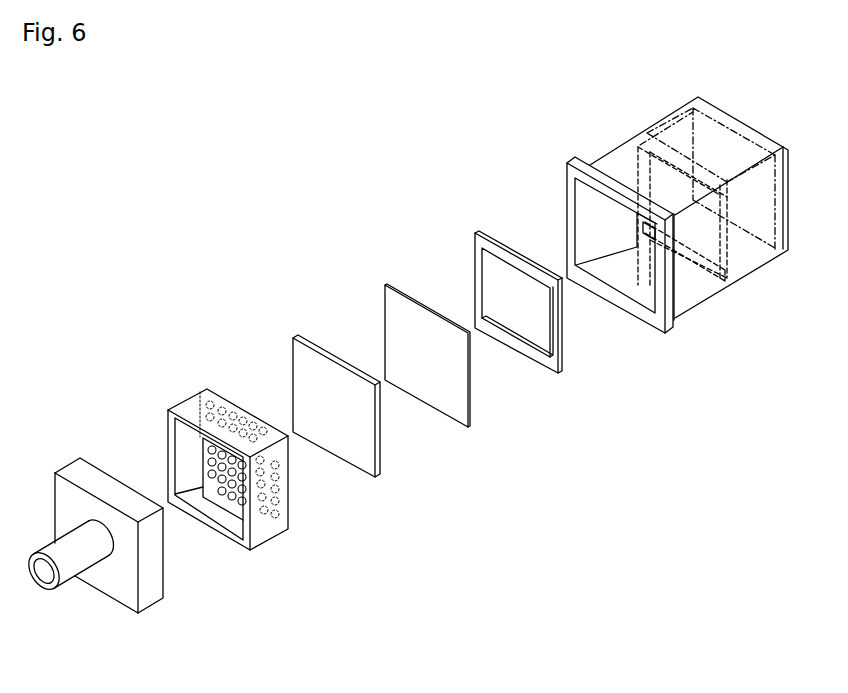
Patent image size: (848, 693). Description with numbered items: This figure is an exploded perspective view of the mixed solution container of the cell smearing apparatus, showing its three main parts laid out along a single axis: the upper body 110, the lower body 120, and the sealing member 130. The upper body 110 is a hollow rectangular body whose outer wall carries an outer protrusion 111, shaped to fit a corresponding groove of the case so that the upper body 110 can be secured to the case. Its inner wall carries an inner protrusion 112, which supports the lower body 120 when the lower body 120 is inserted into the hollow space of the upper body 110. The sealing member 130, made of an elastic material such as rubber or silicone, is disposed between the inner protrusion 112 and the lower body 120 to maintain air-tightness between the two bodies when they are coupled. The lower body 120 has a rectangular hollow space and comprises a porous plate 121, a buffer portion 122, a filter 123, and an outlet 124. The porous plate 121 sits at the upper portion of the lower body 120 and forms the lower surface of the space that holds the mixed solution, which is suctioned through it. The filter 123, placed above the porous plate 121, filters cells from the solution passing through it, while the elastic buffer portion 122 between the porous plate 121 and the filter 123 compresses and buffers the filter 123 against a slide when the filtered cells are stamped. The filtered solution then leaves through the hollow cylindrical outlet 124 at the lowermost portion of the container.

The upper body 110 is at (713, 132).
The outer protrusion 111 is at (645, 320).
The inner protrusion 112 is at (730, 277).
The lower body 120 is at (380, 275).
The porous plate 121 is at (277, 517).
The buffer portion 122 is at (362, 466).
The filter 123 is at (438, 398).
The outlet 124 is at (70, 575).
The sealing member 130 is at (522, 353).